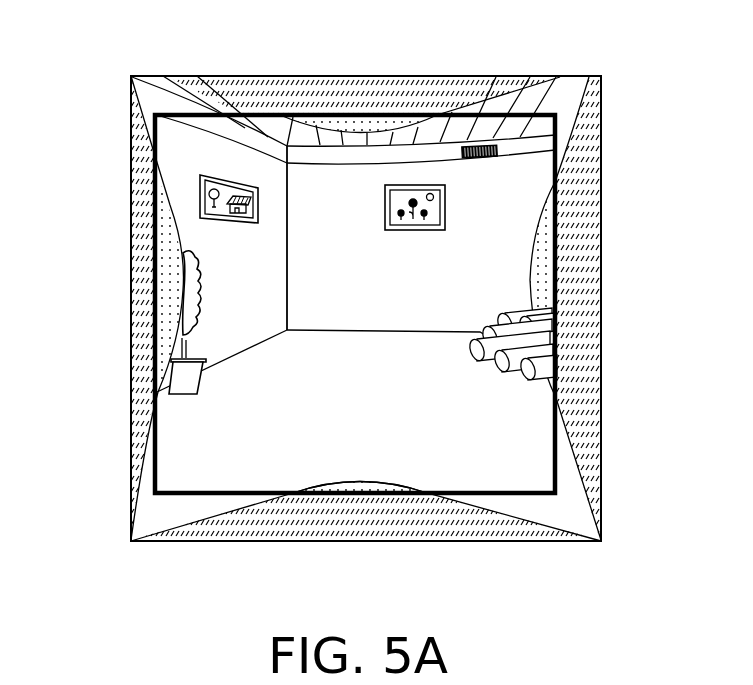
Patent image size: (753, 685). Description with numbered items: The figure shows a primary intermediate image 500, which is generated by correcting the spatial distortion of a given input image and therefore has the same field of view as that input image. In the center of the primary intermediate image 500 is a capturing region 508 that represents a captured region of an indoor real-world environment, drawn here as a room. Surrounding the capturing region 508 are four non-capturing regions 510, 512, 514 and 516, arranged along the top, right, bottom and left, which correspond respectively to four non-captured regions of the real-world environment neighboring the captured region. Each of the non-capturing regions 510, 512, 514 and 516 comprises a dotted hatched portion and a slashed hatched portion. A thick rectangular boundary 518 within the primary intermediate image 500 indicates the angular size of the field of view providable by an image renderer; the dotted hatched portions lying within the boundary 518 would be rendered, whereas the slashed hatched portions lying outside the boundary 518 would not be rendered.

The primary intermediate image 500 is at (637, 61).
The capturing region 508 is at (200, 159).
The non-capturing region 510 is at (226, 72).
The non-capturing region 512 is at (608, 256).
The non-capturing region 514 is at (228, 548).
The non-capturing region 516 is at (129, 291).
The thick rectangular boundary 518 is at (153, 476).